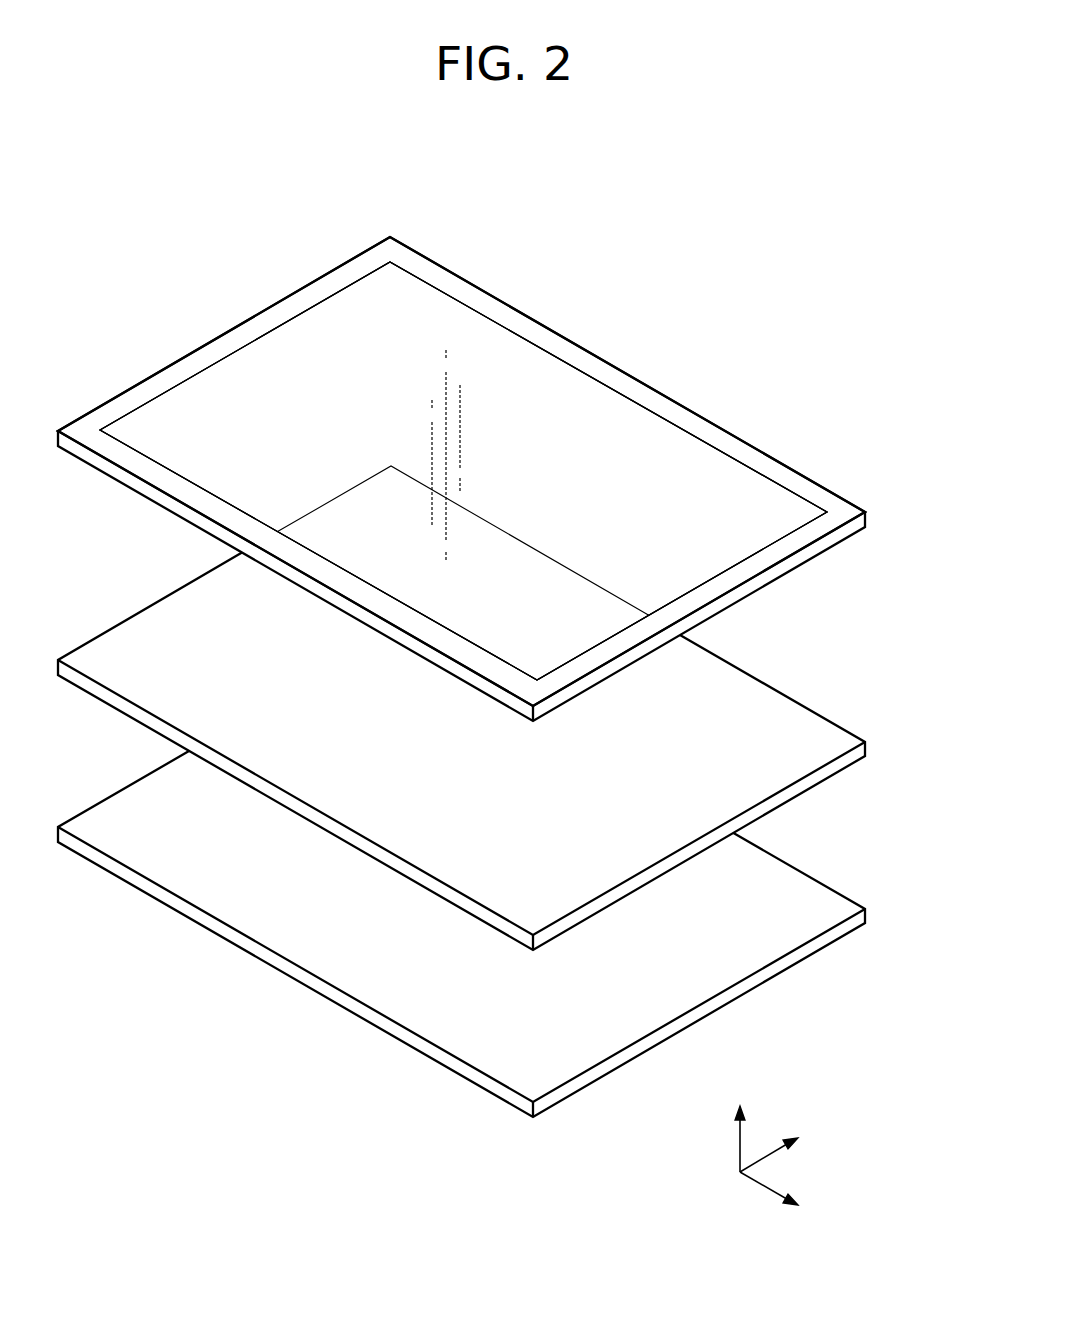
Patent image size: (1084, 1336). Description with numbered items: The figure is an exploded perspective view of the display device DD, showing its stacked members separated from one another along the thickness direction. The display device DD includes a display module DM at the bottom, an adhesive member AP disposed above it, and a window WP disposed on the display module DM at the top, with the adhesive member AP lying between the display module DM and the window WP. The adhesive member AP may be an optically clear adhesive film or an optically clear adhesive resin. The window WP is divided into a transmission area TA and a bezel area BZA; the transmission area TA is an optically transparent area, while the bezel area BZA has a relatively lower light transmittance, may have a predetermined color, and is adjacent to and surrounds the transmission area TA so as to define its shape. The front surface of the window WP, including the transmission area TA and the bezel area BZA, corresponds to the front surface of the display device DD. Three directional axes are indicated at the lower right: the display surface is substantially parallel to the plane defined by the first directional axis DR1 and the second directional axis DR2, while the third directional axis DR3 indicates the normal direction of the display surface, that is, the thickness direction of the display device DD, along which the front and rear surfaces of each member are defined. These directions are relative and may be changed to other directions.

The display device DD is at (505, 658).
The window WP is at (867, 520).
The bezel area BZA is at (273, 319).
The transmission area TA is at (222, 392).
The adhesive member AP is at (858, 752).
The display module DM is at (858, 920).
The first directional axis DR1 is at (794, 1199).
The second directional axis DR2 is at (794, 1147).
The third directional axis DR3 is at (744, 1127).